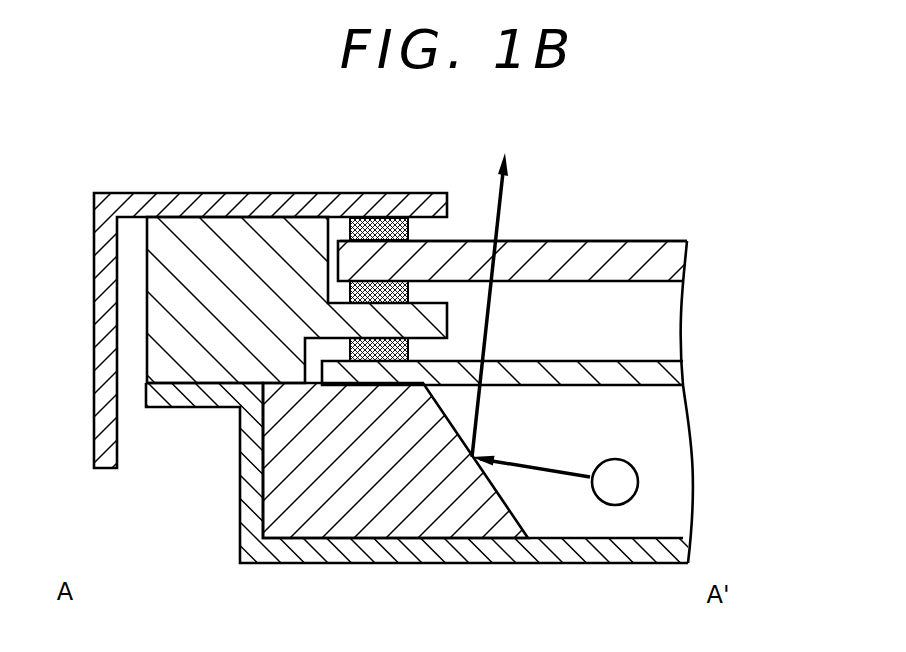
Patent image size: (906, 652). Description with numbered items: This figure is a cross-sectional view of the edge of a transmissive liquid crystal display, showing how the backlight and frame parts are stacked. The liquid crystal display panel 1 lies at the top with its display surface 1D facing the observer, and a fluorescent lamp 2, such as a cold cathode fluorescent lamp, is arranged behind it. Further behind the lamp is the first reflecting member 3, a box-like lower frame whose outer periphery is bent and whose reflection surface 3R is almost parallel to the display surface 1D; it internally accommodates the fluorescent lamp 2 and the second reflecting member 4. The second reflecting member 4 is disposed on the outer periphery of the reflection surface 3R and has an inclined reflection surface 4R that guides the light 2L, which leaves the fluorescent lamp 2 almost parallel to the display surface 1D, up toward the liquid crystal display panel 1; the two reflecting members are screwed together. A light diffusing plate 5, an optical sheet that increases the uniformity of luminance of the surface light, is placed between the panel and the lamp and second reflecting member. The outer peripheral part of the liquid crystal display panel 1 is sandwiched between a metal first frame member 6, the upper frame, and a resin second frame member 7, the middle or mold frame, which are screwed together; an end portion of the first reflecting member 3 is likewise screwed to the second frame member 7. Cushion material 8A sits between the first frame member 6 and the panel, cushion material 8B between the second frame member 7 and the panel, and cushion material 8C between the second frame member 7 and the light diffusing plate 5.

The liquid crystal display panel 1 is at (667, 260).
The display surface 1D is at (612, 236).
The fluorescent lamp 2 is at (623, 477).
The light 2L is at (531, 299).
The first reflecting member 3 is at (463, 545).
The reflection surface 3R is at (651, 534).
The second reflecting member 4 is at (347, 508).
The reflection surface 4R is at (511, 498).
The light diffusing plate 5 is at (657, 376).
The first frame member 6 is at (153, 207).
The second frame member 7 is at (237, 278).
The cushion material 8A is at (362, 230).
The cushion material 8B is at (388, 292).
The cushion material 8C is at (373, 362).